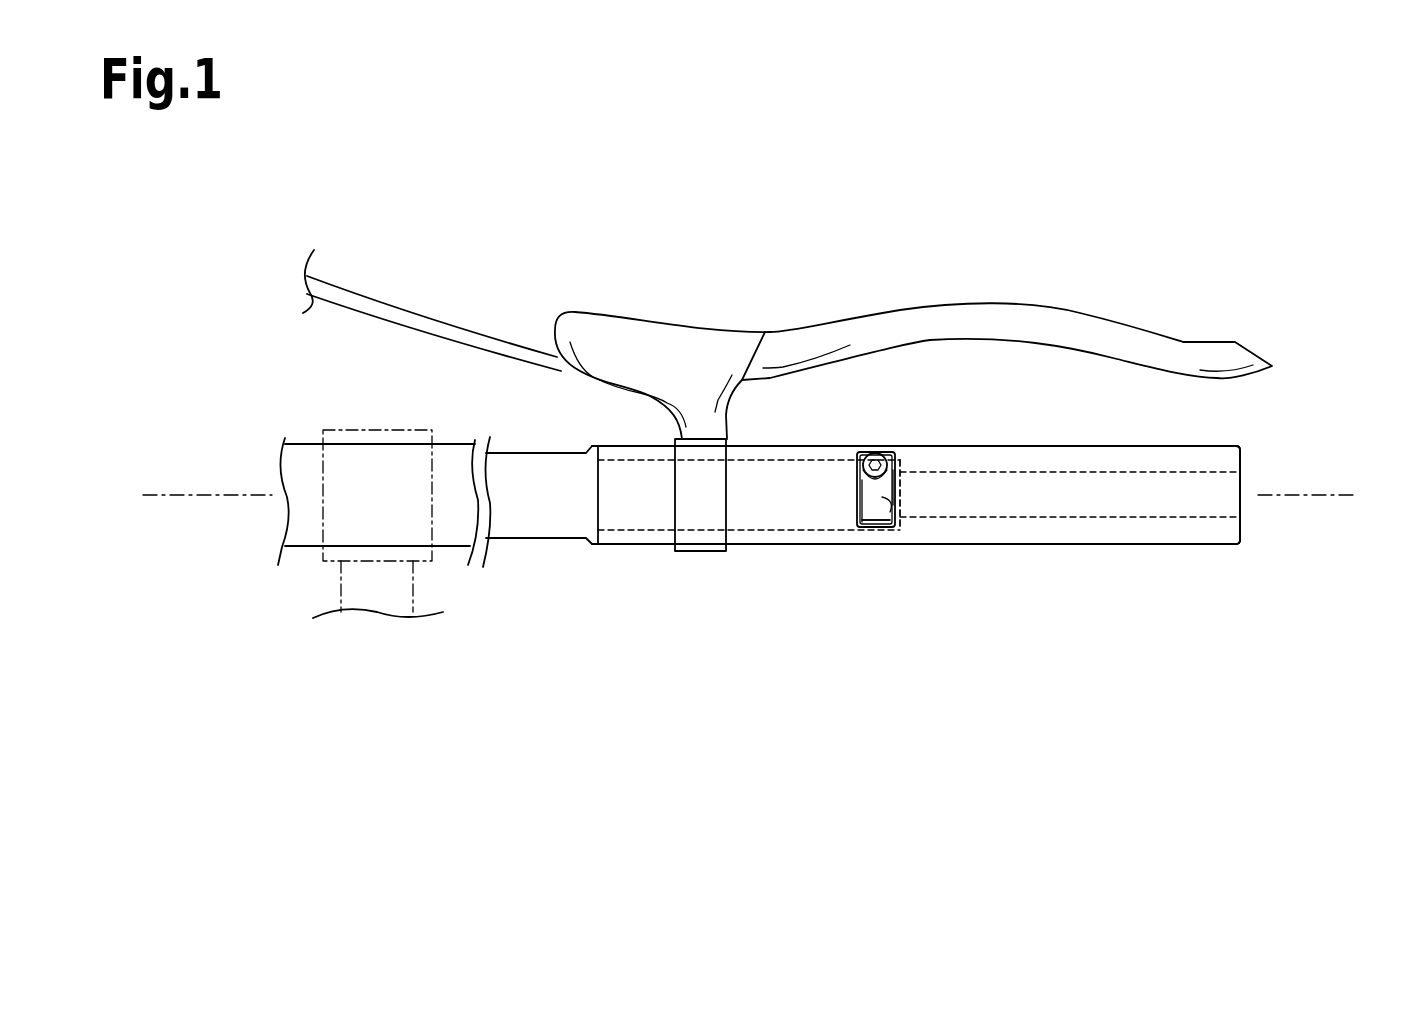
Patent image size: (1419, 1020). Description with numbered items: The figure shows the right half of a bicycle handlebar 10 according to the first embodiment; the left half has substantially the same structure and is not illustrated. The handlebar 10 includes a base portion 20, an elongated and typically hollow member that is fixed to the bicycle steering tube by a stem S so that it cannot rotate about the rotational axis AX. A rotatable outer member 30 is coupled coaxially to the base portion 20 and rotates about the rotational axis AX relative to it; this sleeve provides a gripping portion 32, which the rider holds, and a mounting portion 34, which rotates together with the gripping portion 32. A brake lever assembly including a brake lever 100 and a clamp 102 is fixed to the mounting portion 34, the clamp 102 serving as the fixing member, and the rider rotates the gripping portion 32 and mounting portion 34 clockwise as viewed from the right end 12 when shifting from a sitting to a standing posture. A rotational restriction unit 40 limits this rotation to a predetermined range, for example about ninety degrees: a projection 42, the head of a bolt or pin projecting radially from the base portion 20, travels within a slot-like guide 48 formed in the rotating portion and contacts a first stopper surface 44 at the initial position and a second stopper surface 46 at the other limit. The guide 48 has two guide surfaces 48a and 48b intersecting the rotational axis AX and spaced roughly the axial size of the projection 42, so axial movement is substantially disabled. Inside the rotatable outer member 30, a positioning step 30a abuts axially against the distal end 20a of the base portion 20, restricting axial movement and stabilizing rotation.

The bicycle handlebar 10 is at (540, 670).
The right end 12 is at (1242, 530).
The base portion 20 is at (538, 518).
The distal end 20a is at (900, 480).
The rotatable outer member 30 is at (818, 650).
The positioning step 30a is at (892, 520).
The gripping portion 32 is at (1240, 600).
The mounting portion 34 is at (727, 600).
The rotational restriction unit 40 is at (889, 481).
The projection 42 is at (857, 463).
The first stopper surface 44 is at (873, 453).
The second stopper surface 46 is at (857, 507).
The guide 48 is at (870, 527).
The guide surface 48a is at (893, 515).
The guide surface 48b is at (892, 482).
The brake lever 100 is at (855, 332).
The clamp 102 is at (700, 450).
The stem S is at (377, 429).
The rotational axis AX is at (771, 495).